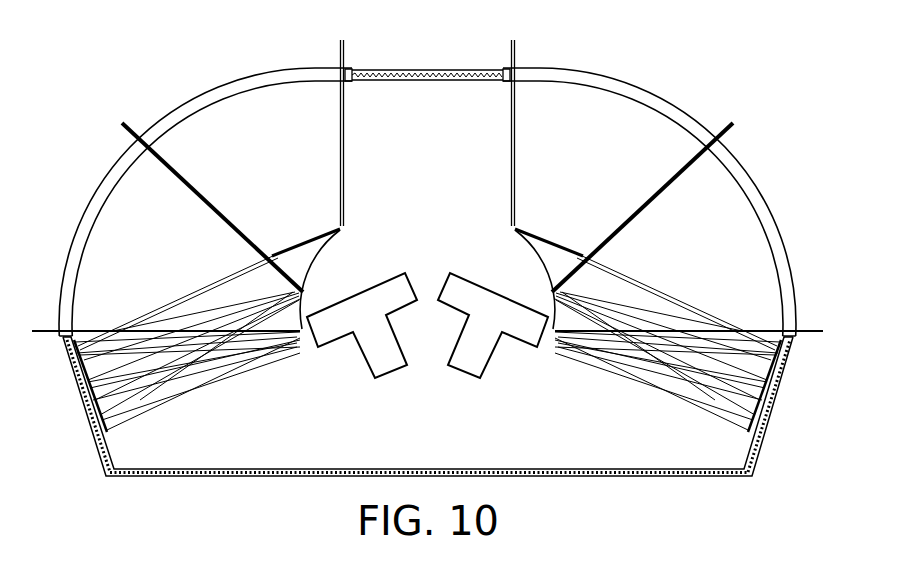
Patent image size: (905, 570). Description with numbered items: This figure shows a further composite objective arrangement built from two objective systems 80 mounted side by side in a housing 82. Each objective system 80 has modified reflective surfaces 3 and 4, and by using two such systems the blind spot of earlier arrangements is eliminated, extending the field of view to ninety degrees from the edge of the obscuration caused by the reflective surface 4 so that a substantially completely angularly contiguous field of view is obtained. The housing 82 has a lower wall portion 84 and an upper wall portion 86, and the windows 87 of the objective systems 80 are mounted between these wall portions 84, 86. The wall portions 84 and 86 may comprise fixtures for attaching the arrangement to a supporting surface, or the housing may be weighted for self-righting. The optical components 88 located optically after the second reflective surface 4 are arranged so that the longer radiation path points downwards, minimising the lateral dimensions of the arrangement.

The objective system 80 is at (171, 57).
The window 87 is at (246, 77).
The upper wall portion 86 is at (428, 82).
The reflective surface 3 is at (328, 233).
The optical components 88 is at (378, 380).
The second reflective surface 4 is at (83, 406).
The housing 82 is at (622, 484).
The lower wall portion 84 is at (97, 455).